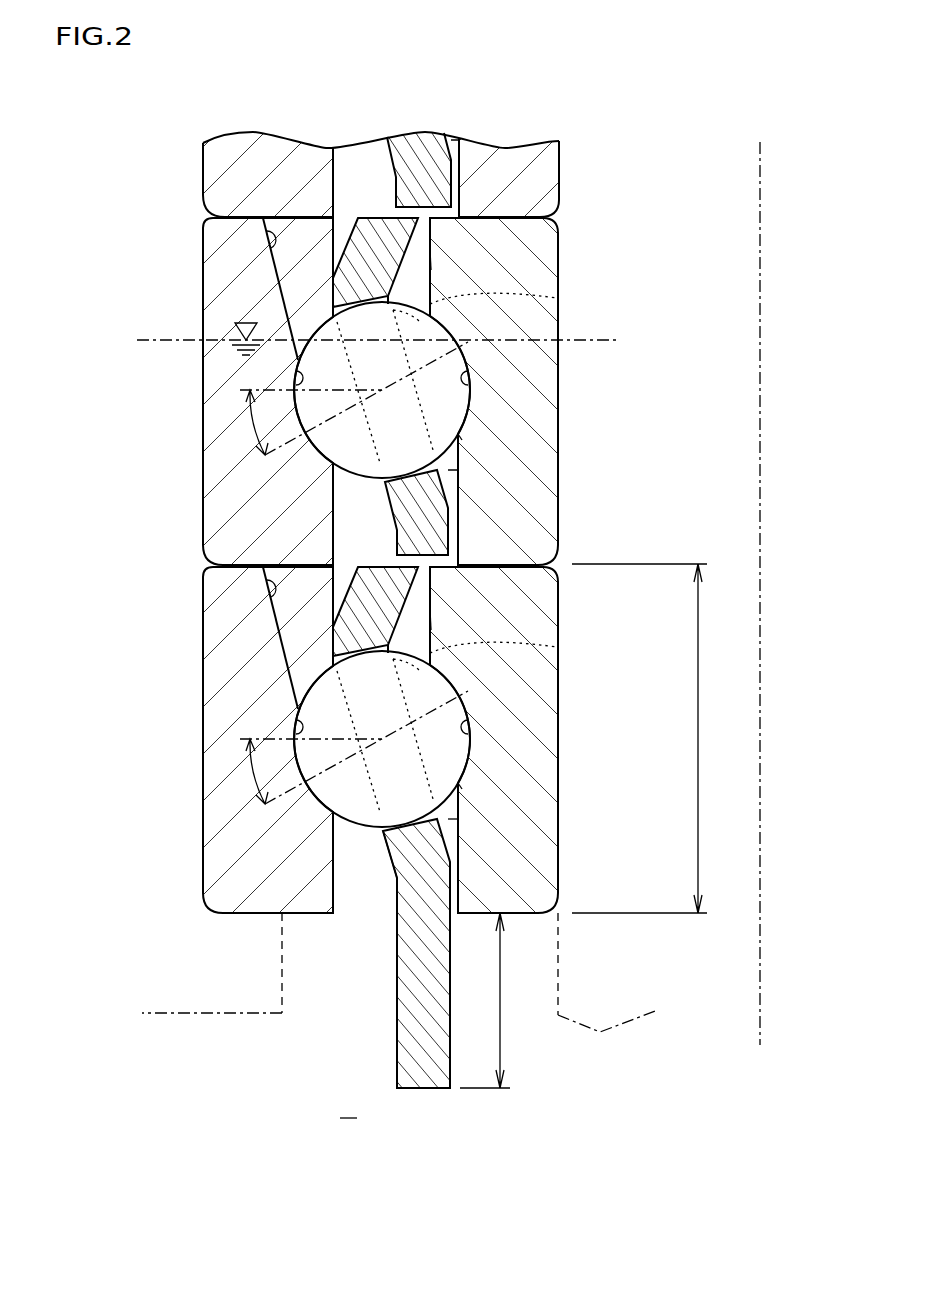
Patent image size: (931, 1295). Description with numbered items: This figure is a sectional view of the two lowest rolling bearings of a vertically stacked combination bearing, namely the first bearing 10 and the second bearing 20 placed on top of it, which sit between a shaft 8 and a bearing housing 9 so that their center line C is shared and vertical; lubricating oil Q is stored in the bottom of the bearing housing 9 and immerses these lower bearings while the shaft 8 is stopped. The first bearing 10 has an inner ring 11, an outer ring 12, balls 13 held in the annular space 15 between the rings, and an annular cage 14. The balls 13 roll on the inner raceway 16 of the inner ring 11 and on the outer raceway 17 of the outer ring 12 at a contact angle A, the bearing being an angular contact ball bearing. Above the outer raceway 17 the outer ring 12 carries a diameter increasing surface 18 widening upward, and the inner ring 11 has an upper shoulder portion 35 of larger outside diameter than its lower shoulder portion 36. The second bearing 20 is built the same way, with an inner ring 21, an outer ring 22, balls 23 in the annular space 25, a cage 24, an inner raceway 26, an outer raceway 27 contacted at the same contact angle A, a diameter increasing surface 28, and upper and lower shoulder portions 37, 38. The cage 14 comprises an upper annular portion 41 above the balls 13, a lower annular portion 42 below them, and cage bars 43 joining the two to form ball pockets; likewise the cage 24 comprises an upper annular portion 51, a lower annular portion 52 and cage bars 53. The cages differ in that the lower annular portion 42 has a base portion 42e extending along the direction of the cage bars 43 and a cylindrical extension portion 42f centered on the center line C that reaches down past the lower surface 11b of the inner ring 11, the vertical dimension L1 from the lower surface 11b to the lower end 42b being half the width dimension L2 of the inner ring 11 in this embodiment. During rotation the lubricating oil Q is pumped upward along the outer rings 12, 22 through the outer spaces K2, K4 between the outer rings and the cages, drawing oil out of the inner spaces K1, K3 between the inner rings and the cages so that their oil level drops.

The second bearing 20 is at (191, 170).
The diameter increasing surface 28 is at (266, 236).
The outer ring 22 is at (208, 292).
The balls 23 is at (323, 322).
The outer raceway 27 is at (297, 370).
The annular space 25 is at (343, 498).
The outer space K4 is at (357, 527).
The cage 24 is at (458, 142).
The lower annular portion 52 is at (440, 183).
The upper annular portion 51 is at (398, 241).
The upper shoulder portion 37 is at (447, 258).
The cage bars 53 is at (557, 298).
The inner ring 21 is at (548, 323).
The inner raceway 26 is at (470, 368).
The inner space K3 is at (473, 437).
The lower shoulder portion 38 is at (472, 533).
The diameter increasing surface 18 is at (266, 585).
The first bearing 10 is at (191, 619).
The outer ring 12 is at (208, 641).
The balls 13 is at (323, 671).
The outer raceway 17 is at (297, 719).
The annular space 15 is at (343, 847).
The outer space K2 is at (357, 876).
The upper annular portion 41 is at (398, 597).
The upper shoulder portion 35 is at (440, 620).
The cage bars 43 is at (557, 647).
The inner ring 11 is at (548, 672).
The inner raceway 16 is at (470, 717).
The inner space K1 is at (473, 786).
The cage 14 is at (450, 812).
The lower annular portion 42 is at (435, 854).
The lower shoulder portion 36 is at (472, 882).
The base portion 42e is at (383, 848).
The extension portion 42f is at (408, 1025).
The lower end 42b is at (427, 1090).
The lower surface 11b is at (520, 917).
The vertical dimension L1 is at (497, 1000).
The width dimension L2 is at (653, 738).
The contact angle A is at (252, 597).
The bearing housing 9 is at (185, 1013).
The shaft 8 is at (628, 1023).
The center line C is at (762, 162).
The lubricating oil Q is at (349, 1105).